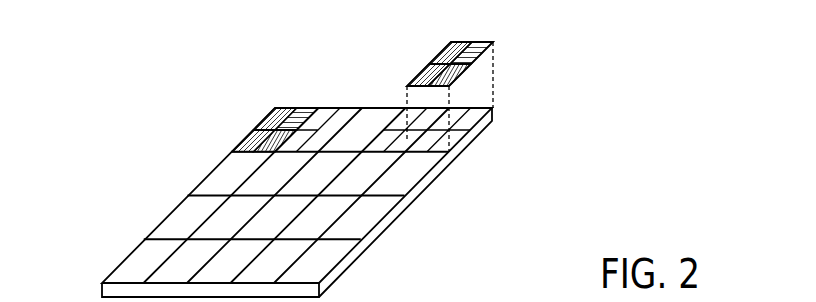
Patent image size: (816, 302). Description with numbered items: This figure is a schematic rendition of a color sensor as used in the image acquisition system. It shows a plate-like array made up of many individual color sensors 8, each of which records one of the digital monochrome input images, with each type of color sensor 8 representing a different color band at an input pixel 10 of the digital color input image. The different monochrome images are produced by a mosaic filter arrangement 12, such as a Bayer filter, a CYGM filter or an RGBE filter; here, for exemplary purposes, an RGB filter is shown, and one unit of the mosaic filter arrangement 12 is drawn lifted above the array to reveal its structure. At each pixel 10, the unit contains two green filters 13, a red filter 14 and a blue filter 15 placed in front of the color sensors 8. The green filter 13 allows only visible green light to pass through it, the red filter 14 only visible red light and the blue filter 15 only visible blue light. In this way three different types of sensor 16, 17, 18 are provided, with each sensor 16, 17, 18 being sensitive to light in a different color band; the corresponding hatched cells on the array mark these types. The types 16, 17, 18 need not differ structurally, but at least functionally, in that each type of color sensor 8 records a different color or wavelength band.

The color sensor 8 is at (478, 106).
The input pixel 10 is at (137, 259).
The mosaic filter arrangement 12 is at (478, 30).
The green filter 13 is at (447, 43).
The red filter 14 is at (494, 50).
The blue filter 15 is at (424, 70).
The first type of sensor 16 is at (287, 137).
The second type of sensor 17 is at (290, 128).
The third type of sensor 18 is at (243, 147).